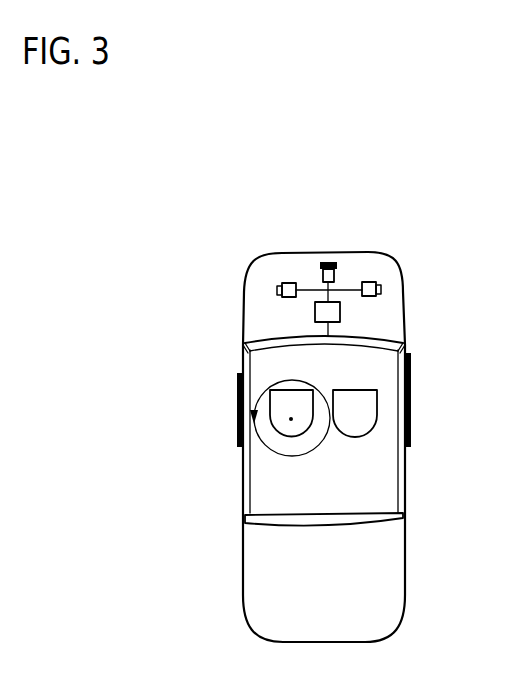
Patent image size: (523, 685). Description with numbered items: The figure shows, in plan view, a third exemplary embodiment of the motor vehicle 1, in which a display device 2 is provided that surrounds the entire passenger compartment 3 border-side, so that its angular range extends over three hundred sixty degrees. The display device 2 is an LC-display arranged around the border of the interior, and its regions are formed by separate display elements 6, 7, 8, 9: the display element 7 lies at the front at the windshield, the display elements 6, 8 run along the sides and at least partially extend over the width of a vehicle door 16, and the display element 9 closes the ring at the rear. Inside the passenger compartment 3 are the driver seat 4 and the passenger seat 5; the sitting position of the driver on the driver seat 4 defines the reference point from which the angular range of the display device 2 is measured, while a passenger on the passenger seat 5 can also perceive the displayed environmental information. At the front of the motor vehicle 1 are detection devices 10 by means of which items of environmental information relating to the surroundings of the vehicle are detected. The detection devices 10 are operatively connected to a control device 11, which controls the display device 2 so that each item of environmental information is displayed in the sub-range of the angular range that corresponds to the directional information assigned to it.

The motor vehicle 1 is at (180, 187).
The display device 2 is at (243, 343).
The passenger compartment 3 is at (262, 498).
The driver seat 4 is at (278, 432).
The passenger seat 5 is at (377, 404).
The display element 6 is at (243, 372).
The display element 7 is at (400, 342).
The display element 8 is at (407, 368).
The display element 9 is at (335, 520).
The detection device 10 is at (283, 283).
The control device 11 is at (340, 312).
The vehicle door 16 is at (240, 400).